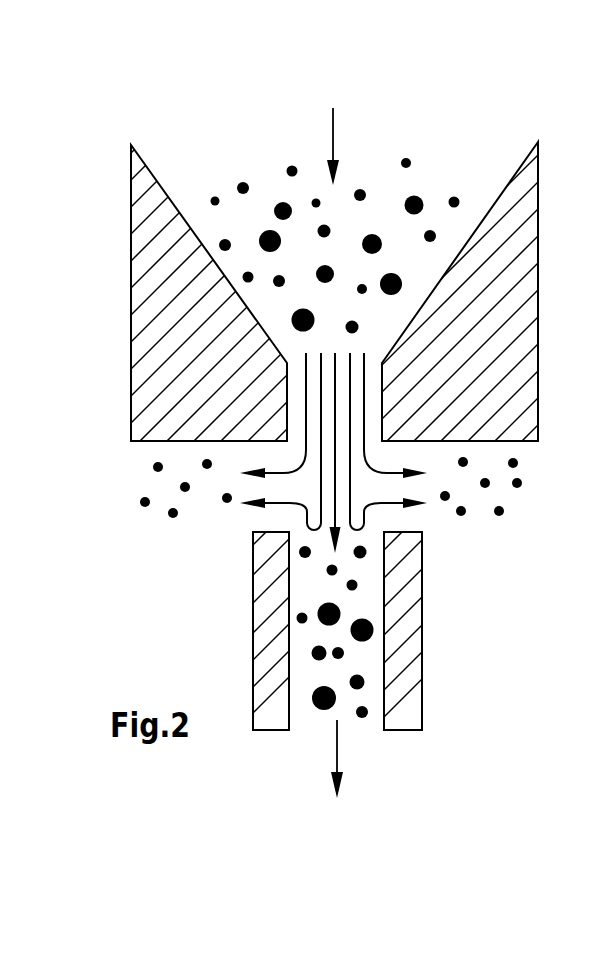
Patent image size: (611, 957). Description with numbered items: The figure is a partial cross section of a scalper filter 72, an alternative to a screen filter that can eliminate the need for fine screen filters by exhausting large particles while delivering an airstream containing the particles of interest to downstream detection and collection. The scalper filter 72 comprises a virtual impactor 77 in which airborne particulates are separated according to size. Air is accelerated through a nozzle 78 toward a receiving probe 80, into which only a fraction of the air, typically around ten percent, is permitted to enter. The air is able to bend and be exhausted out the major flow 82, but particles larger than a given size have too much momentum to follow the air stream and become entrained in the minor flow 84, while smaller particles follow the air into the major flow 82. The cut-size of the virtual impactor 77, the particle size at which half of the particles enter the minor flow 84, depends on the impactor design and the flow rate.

The scalper filter 72 is at (208, 112).
The virtual impactor 77 is at (150, 258).
The nozzle 78 is at (342, 353).
The receiving probe 80 is at (373, 540).
The major flow 82 is at (502, 479).
The minor flow 84 is at (343, 717).